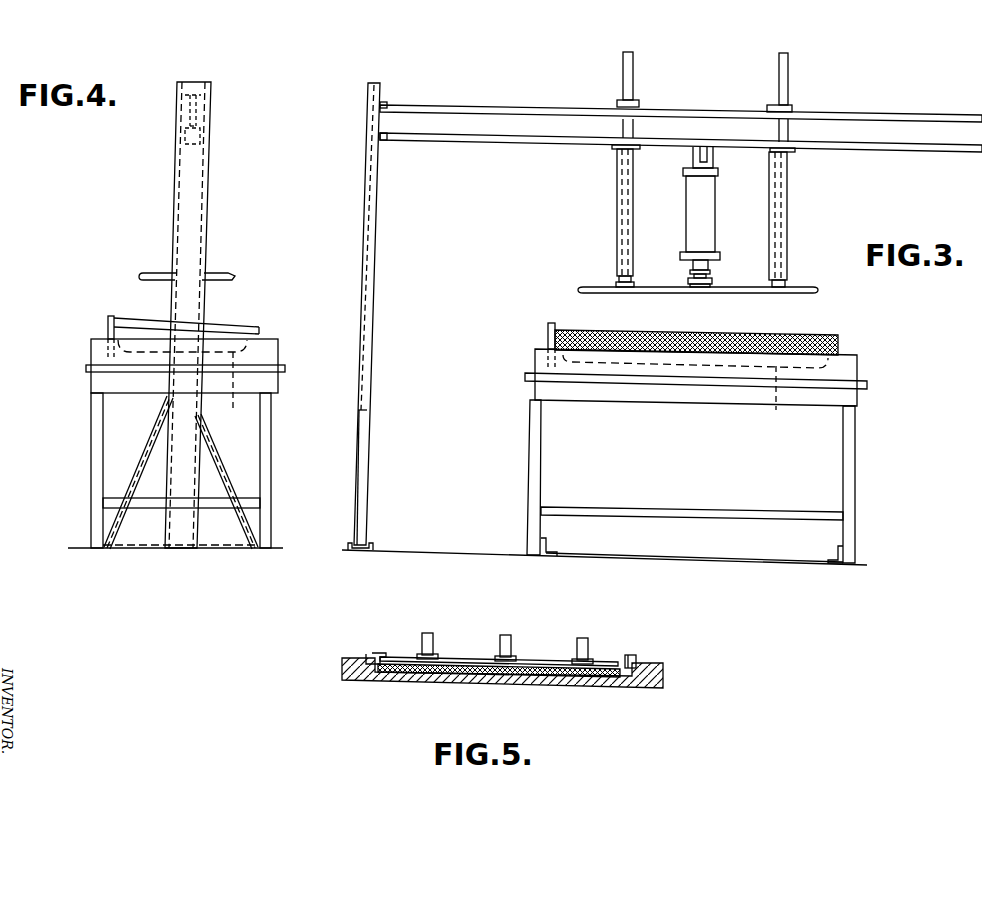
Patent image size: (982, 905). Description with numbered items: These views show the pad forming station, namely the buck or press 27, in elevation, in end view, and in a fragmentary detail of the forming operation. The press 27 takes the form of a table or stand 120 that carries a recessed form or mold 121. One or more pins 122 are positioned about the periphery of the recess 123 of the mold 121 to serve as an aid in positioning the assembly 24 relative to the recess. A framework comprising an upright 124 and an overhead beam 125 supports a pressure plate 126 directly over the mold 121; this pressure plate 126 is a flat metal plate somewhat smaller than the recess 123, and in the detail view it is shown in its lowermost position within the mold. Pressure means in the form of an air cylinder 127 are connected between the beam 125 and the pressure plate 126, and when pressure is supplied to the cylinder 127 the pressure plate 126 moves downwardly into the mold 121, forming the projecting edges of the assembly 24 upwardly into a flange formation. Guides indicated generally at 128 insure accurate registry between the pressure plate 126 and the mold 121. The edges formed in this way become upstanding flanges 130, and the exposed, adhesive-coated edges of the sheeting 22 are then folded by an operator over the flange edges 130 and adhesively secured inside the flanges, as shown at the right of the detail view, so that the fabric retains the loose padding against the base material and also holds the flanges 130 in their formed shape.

In FIG. 5, the sheeting 22 is at (366, 654).
In FIG. 3, the assembly 24 is at (829, 345).
In FIG. 4, the buck or press 27 is at (211, 121).
In FIG. 3, the buck or press 27 is at (461, 104).
In FIG. 3, the table or stand 120 is at (853, 449).
In FIG. 4, the recessed form or mold 121 is at (276, 361).
In FIG. 3, the recessed form or mold 121 is at (853, 372).
In FIG. 5, the recessed form or mold 121 is at (664, 670).
In FIG. 4, the pins 122 is at (108, 327).
In FIG. 3, the pins 122 is at (549, 332).
In FIG. 4, the recess 123 is at (185, 387).
In FIG. 3, the recess 123 is at (695, 396).
In FIG. 5, the recess 123 is at (626, 681).
In FIG. 4, the upright 124 is at (198, 252).
In FIG. 3, the upright 124 is at (370, 322).
In FIG. 3, the overhead beam 125 is at (510, 128).
In FIG. 4, the pressure plate 126 is at (231, 277).
In FIG. 3, the pressure plate 126 is at (764, 292).
In FIG. 5, the pressure plate 126 is at (600, 662).
In FIG. 3, the air cylinder 127 is at (712, 188).
In FIG. 3, the guides 128 is at (781, 222).
In FIG. 5, the upstanding flanges 130 is at (634, 657).